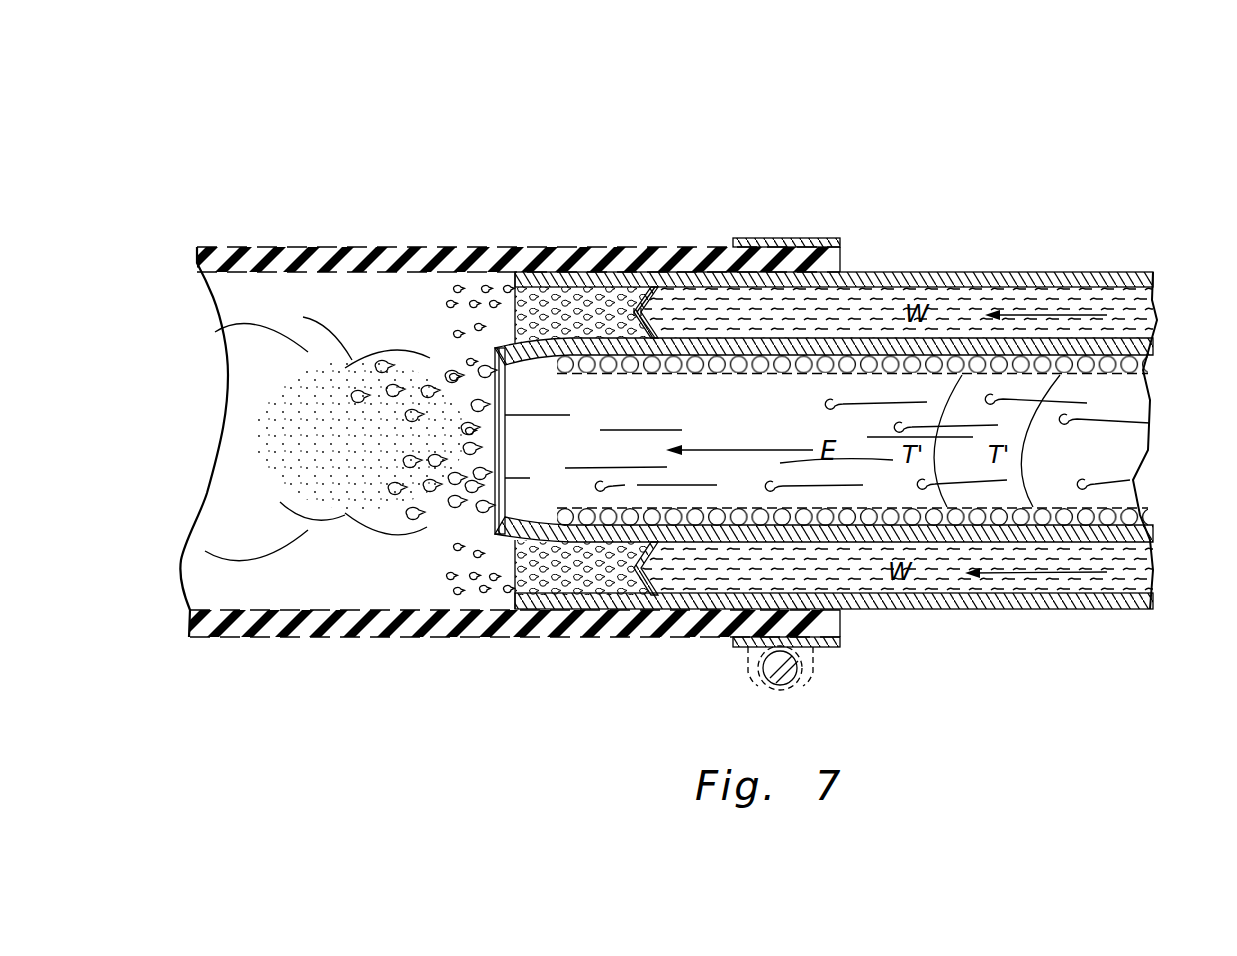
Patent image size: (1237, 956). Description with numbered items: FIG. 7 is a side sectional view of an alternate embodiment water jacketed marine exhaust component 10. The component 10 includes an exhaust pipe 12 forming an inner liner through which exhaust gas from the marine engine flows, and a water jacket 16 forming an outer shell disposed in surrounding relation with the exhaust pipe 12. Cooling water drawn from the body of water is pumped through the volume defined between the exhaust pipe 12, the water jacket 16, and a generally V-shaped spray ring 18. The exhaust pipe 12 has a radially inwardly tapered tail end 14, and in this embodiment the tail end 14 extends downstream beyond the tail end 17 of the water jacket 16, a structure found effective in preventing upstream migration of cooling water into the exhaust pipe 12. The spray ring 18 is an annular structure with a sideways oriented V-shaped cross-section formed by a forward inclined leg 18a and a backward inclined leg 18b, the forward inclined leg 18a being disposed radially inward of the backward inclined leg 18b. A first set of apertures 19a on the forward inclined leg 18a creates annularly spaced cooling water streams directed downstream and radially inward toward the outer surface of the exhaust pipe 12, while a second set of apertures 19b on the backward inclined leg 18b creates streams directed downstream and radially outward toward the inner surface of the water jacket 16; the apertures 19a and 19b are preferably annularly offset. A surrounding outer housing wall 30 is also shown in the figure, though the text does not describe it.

The water jacketed exhaust component 10 is at (945, 158).
The outer housing wall 30 is at (357, 247).
The tail end of water jacket 17 is at (527, 247).
The first set of apertures 19a is at (637, 312).
The second set of apertures 19b is at (650, 290).
The backward inclined leg 18b is at (657, 292).
The water jacket 16 is at (967, 272).
The exhaust pipe 12 is at (1150, 348).
The tail end of exhaust pipe 14 is at (514, 362).
The forward inclined leg 18a is at (648, 337).
The spray ring 18 is at (647, 313).